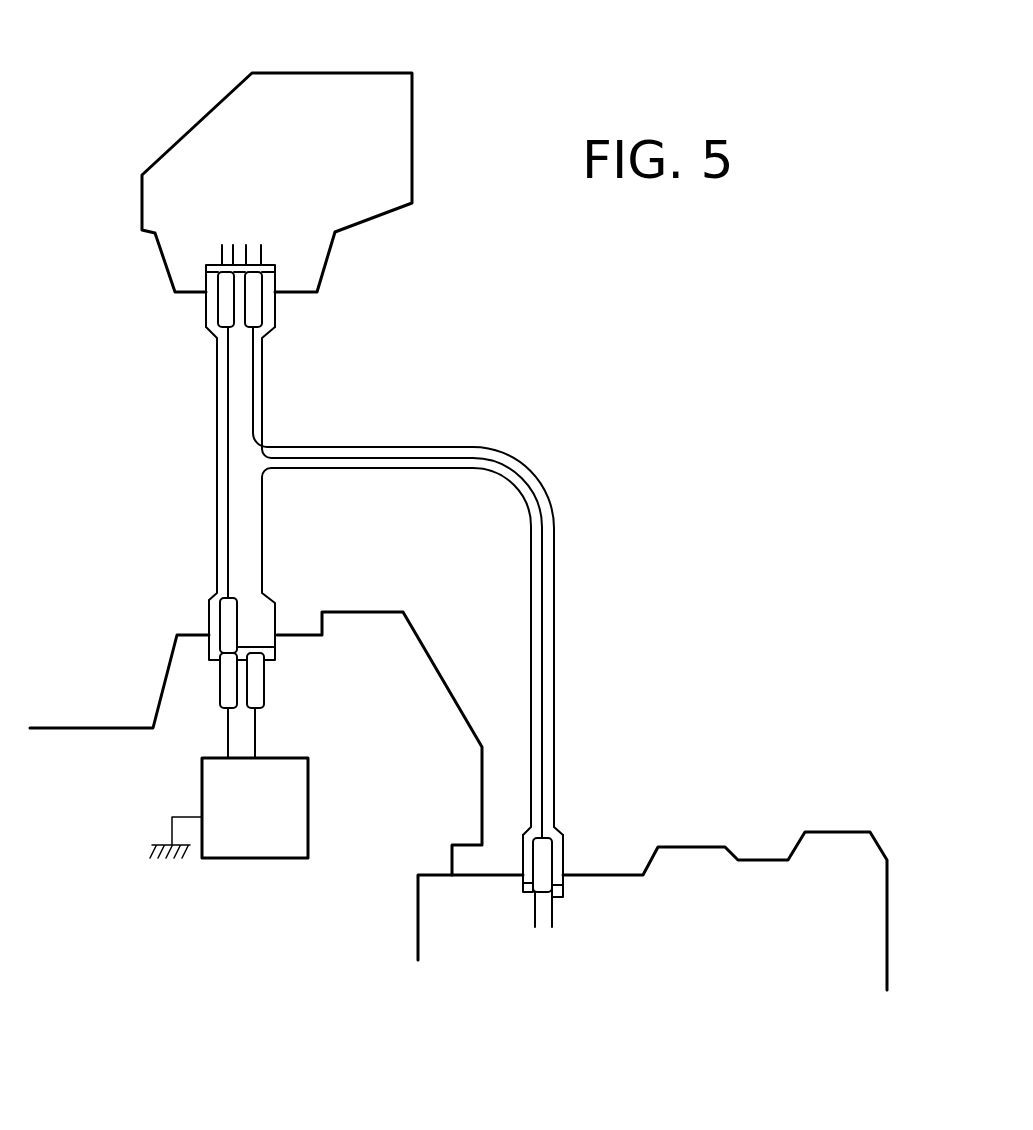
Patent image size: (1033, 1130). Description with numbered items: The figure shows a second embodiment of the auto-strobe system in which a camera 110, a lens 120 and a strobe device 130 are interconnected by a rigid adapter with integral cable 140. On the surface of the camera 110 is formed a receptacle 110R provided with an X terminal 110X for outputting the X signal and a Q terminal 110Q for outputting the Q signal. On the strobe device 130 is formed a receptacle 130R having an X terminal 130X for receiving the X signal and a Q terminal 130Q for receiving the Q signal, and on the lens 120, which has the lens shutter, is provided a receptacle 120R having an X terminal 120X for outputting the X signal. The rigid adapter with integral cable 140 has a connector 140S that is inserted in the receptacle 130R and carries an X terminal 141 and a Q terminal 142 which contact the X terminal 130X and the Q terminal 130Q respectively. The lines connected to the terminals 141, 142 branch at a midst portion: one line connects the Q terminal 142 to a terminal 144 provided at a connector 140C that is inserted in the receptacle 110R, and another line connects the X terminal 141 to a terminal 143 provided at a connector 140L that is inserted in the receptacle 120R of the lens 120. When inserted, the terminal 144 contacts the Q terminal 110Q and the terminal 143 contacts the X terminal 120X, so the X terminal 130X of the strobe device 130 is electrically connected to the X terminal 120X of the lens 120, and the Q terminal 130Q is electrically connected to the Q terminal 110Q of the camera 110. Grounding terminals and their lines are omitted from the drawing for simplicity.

The strobe device 130 is at (341, 54).
The Q terminal 130Q is at (225, 250).
The X terminal 130X is at (253, 247).
The receptacle 130R is at (203, 275).
The X terminal 141 is at (253, 302).
The Q terminal 142 is at (225, 317).
The connector 140S is at (263, 333).
The rigid adapter with integral cable 140 is at (263, 403).
The connector 140C is at (263, 617).
The terminal 144 is at (222, 617).
The camera 110 is at (72, 728).
The receptacle 110R is at (276, 655).
The Q terminal 110Q is at (223, 698).
The X terminal 110X is at (260, 697).
The terminal 143 is at (543, 850).
The connector 140L is at (557, 860).
The lens 120 is at (830, 832).
The X terminal 120X is at (552, 913).
The receptacle 120R is at (527, 893).